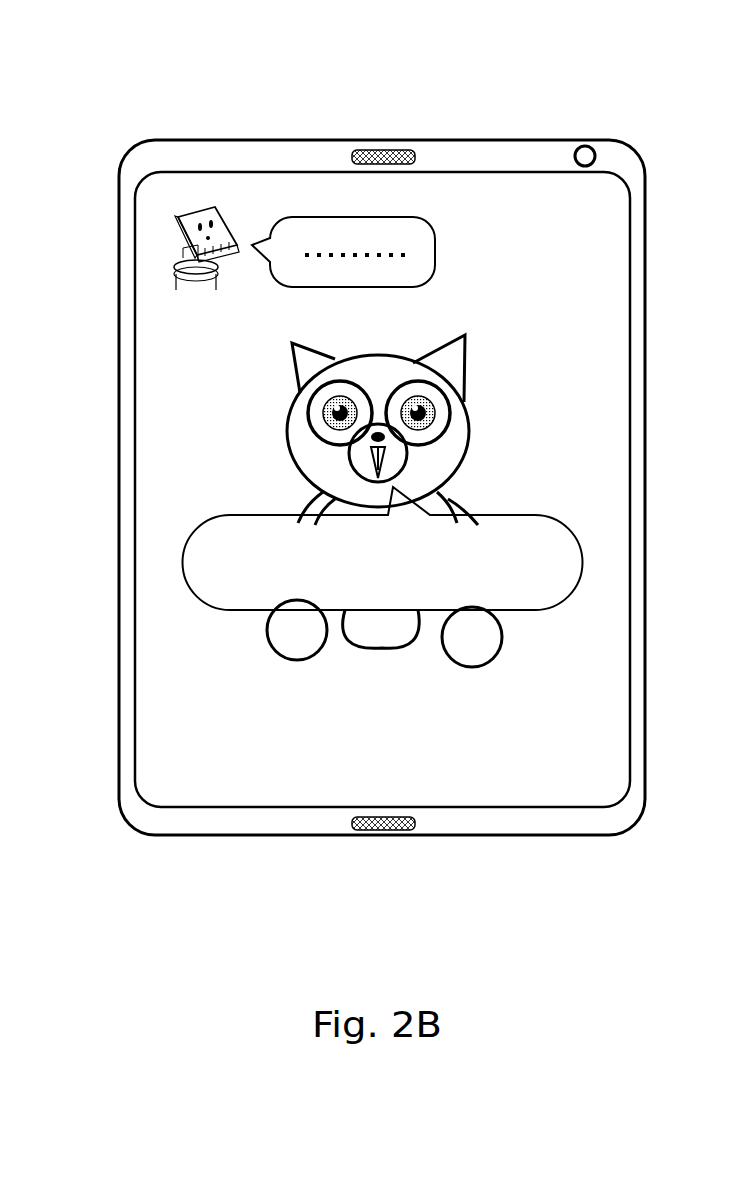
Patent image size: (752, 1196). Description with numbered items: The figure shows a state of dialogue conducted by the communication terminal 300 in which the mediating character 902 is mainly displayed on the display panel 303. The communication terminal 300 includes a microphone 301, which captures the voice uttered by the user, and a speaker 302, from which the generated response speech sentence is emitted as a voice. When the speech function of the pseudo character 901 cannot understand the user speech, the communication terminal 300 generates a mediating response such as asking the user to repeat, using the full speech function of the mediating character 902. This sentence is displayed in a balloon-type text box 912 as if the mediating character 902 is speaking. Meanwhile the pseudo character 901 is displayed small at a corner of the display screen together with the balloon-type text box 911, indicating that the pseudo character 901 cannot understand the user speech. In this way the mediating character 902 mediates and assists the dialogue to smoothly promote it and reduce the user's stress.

The communication terminal 300 is at (203, 39).
The microphone 301 is at (372, 830).
The speaker 302 is at (412, 150).
The display panel 303 is at (553, 172).
The pseudo character 901 is at (180, 247).
The mediating character 902 is at (462, 424).
The balloon-type text box 911 is at (435, 238).
The balloon-type text box 912 is at (183, 560).